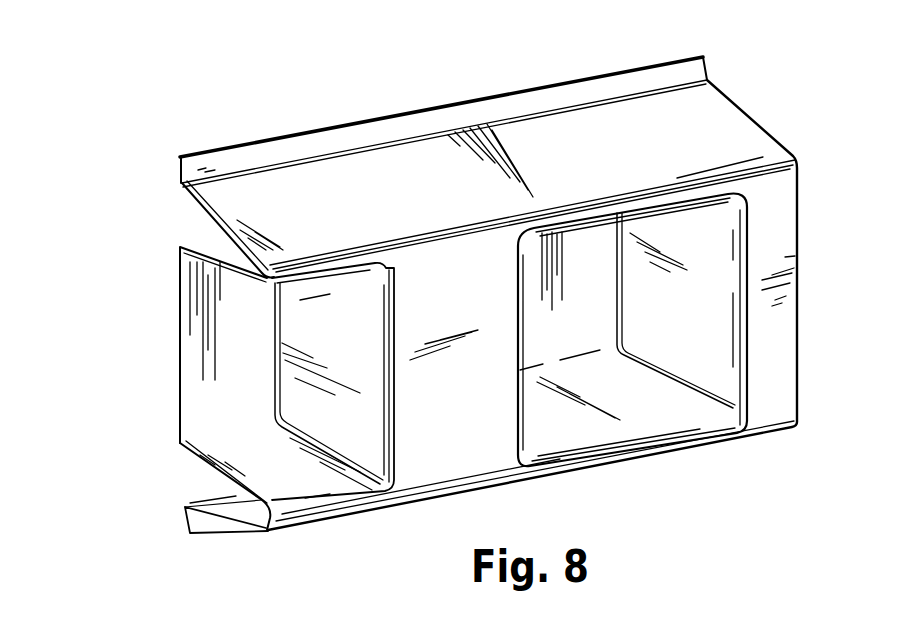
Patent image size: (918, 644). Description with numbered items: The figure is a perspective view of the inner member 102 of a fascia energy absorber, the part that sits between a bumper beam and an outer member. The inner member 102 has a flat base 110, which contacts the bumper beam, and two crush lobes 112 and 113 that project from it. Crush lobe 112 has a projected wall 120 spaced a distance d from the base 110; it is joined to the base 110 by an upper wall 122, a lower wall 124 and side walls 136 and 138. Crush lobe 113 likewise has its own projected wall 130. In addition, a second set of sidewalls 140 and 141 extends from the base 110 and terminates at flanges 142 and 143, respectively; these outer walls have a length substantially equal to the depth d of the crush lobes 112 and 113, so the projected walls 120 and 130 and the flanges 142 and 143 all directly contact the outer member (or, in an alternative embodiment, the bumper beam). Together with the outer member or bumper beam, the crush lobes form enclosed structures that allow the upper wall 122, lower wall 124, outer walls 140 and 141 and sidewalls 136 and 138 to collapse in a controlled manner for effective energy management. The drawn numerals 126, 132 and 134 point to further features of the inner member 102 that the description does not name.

The inner member 102 is at (92, 172).
The base 110 is at (427, 285).
The crush lobe 112 is at (204, 388).
The crush lobe 113 is at (593, 332).
The projected wall 120 is at (177, 290).
The upper wall 122 is at (225, 260).
The lower wall 124 is at (208, 467).
The bottom wall 126 is at (345, 360).
The projected wall 130 is at (588, 252).
The upper edge of opening 132 is at (678, 205).
The lower edge of opening 134 is at (636, 417).
The side wall 136 is at (704, 317).
The side wall 138 is at (520, 305).
The sidewall 140 is at (618, 137).
The sidewall 141 is at (246, 530).
The flange 142 is at (530, 103).
The flange 143 is at (193, 533).